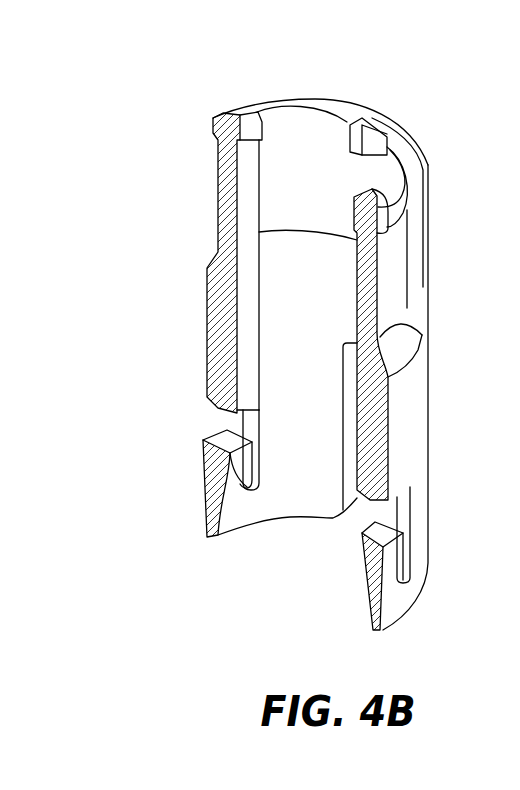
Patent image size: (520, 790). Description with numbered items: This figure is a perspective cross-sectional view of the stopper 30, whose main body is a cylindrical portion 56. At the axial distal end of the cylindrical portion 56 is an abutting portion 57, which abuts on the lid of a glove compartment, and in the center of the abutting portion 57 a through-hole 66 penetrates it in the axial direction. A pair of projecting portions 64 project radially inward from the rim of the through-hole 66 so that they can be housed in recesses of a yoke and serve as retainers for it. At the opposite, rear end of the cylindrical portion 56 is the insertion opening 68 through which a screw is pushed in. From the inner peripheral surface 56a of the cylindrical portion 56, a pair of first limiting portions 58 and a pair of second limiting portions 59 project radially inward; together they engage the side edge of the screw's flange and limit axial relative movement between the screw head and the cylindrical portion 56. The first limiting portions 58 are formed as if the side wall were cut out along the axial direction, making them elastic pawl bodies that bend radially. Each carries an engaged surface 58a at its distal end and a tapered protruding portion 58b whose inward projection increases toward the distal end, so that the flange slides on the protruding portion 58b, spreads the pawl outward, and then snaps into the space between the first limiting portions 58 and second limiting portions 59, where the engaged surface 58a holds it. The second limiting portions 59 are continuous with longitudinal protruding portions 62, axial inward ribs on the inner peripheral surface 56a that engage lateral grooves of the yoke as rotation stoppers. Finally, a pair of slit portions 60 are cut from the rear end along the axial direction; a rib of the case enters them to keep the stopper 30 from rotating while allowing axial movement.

The stopper 30 is at (260, 345).
The cylindrical portion 56 is at (415, 447).
The inner peripheral surface 56a is at (297, 302).
The abutting portion 57 is at (325, 100).
The first limiting portions 58 is at (207, 512).
The engaged surface 58a is at (228, 440).
The protruding portion 58b is at (232, 477).
The second limiting portions 59 is at (223, 413).
The slit portions 60 is at (393, 387).
The longitudinal protruding portions 62 is at (250, 178).
The projecting portions 64 is at (367, 130).
The through-hole 66 is at (295, 154).
The insertion opening 68 is at (296, 487).